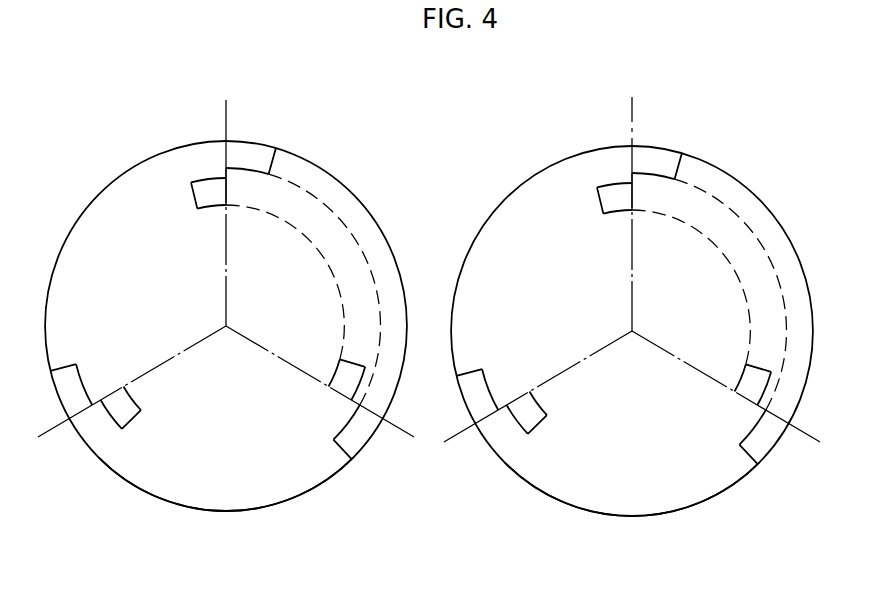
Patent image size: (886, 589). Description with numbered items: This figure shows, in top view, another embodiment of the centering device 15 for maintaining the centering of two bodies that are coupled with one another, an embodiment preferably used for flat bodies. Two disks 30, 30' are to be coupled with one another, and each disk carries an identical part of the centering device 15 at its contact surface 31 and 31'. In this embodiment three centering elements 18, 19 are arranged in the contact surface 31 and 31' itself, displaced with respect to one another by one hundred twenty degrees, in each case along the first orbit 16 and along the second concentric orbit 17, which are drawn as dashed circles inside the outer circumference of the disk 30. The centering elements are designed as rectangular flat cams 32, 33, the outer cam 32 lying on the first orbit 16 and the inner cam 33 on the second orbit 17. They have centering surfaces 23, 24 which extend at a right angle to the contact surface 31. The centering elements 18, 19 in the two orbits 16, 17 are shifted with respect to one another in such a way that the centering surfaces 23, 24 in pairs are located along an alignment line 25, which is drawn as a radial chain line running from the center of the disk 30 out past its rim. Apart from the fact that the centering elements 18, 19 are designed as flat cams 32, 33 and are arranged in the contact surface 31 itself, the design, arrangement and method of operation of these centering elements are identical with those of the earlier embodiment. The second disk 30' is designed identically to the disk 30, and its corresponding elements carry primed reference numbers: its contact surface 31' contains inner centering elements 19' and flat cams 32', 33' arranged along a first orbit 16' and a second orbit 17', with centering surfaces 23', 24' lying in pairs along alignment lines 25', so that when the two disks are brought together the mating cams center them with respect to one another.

The centering device 15 is at (285, 121).
The first orbit 16 is at (333, 271).
The second concentric orbit 17 is at (285, 282).
The centering element 18 is at (494, 105).
The centering element 19 is at (174, 177).
The centering surface 23 is at (205, 195).
The centering surface 24 is at (248, 235).
The alignment line 25 is at (132, 414).
The disk 30 is at (243, 326).
The contact surface 31 is at (226, 517).
The flat cam 32 is at (293, 142).
The flat cam 33 is at (174, 230).
The first orbit 16' is at (748, 294).
The second concentric orbit 17' is at (691, 287).
The centering element 19' is at (583, 193).
The centering surface 23' is at (637, 188).
The centering surface 24' is at (665, 234).
The alignment line 25' is at (632, 386).
The disk 30' is at (632, 330).
The contact surface 31' is at (632, 521).
The flat cam 32' is at (697, 140).
The flat cam 33' is at (592, 239).